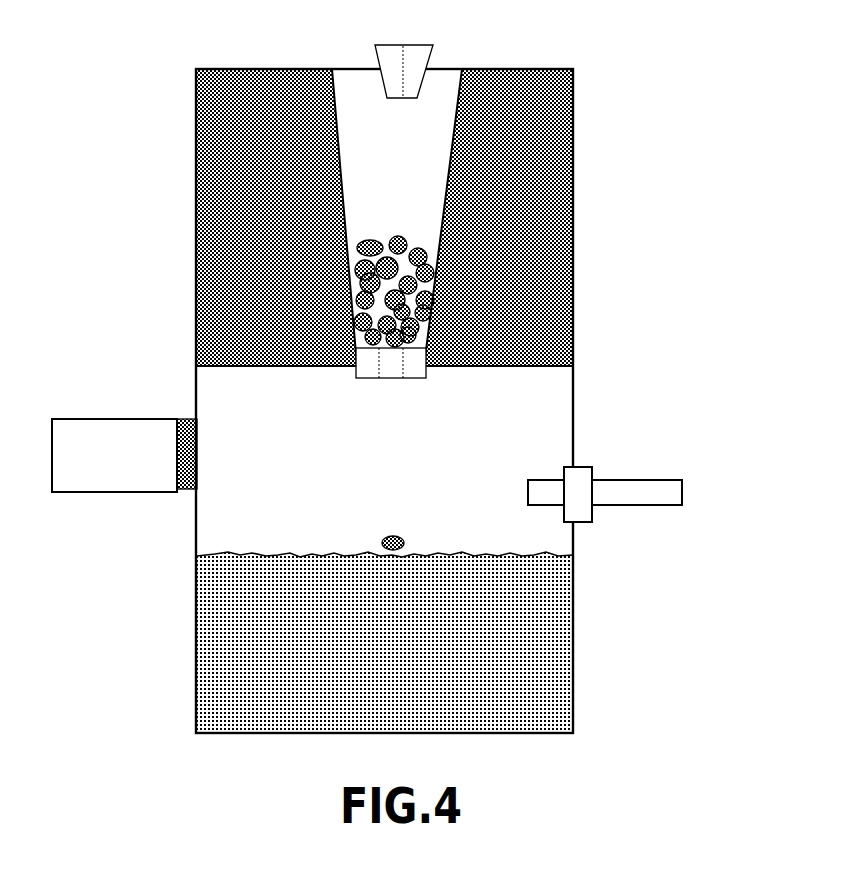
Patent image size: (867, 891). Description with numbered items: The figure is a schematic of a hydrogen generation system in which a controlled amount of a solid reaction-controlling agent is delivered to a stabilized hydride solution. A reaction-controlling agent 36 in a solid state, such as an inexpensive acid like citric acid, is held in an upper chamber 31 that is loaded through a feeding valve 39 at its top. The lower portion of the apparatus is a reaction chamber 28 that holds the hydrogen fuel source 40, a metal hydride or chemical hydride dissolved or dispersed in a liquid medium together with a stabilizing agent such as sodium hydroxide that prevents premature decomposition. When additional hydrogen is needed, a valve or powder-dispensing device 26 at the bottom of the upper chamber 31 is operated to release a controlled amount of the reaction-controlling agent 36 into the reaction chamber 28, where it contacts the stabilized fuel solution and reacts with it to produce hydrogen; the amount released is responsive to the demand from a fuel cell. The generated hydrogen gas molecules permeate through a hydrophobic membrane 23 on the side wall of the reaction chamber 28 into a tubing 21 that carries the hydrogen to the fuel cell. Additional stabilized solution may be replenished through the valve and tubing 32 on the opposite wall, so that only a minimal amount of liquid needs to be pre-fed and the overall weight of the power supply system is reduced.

The tubing 21 is at (105, 435).
The hydrophobic membrane 23 is at (187, 463).
The valve or powder-dispensing device 26 is at (408, 362).
The reaction chamber 28 is at (460, 462).
The chamber 31 is at (422, 183).
The valve and tubing 32 is at (617, 497).
The reaction-controlling agent 36 is at (430, 297).
The feeding valve 39 is at (424, 62).
The hydrogen fuel source 40 is at (515, 648).